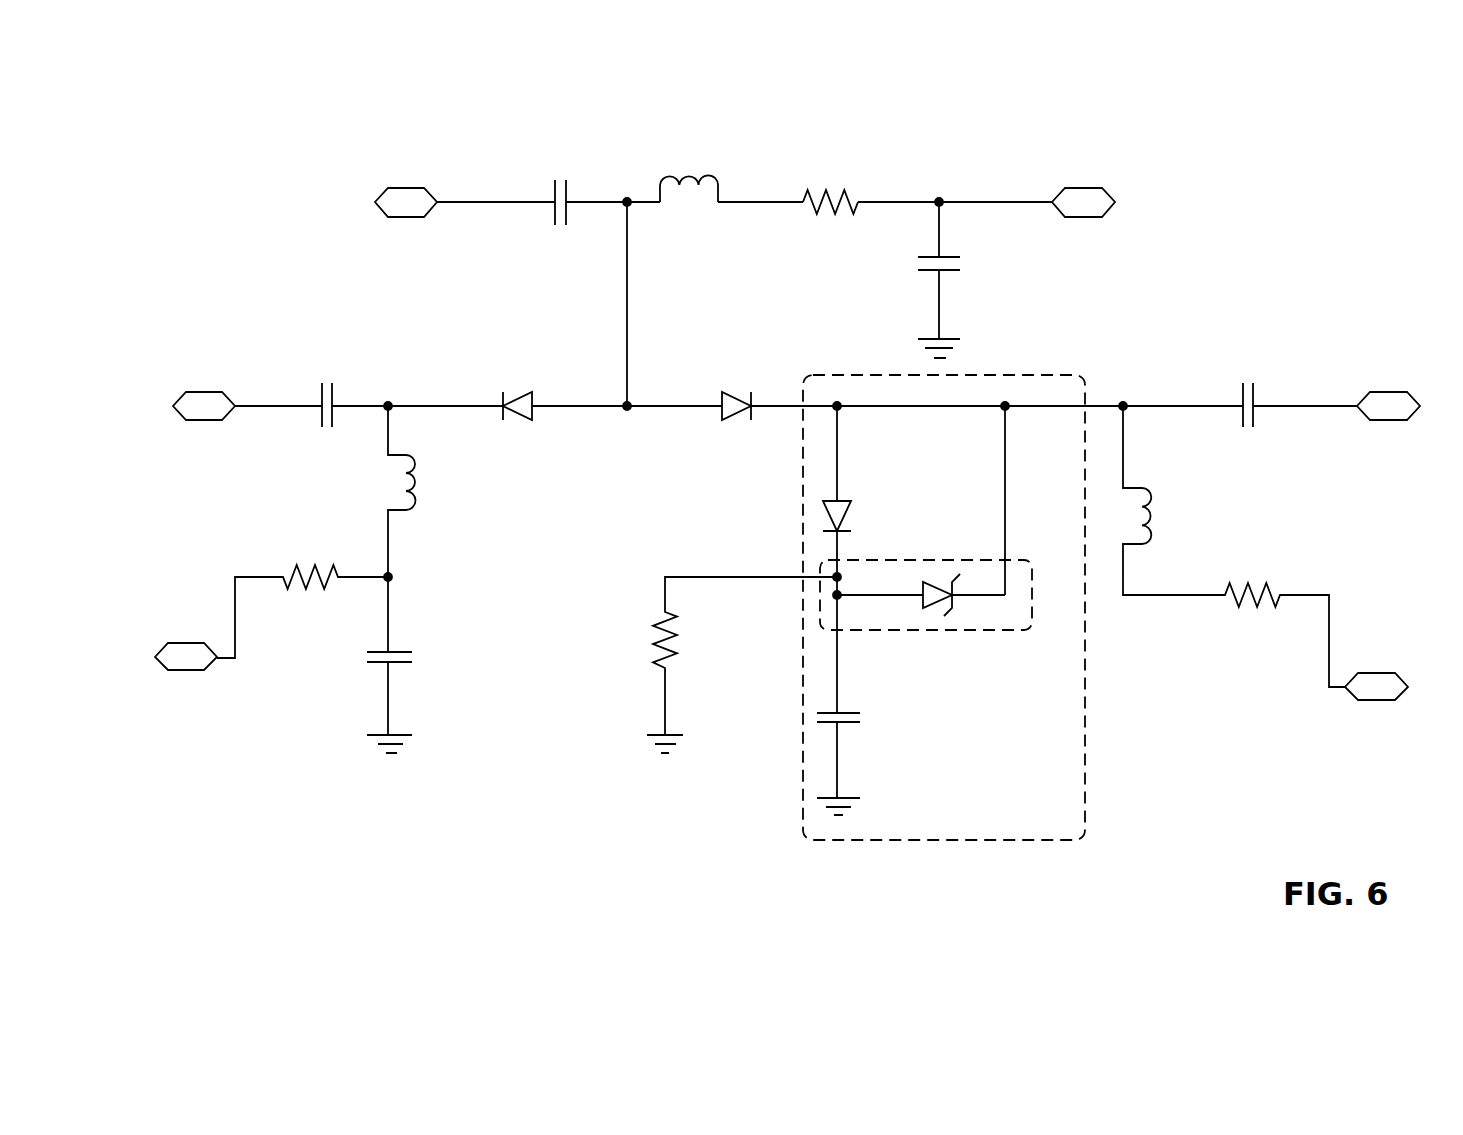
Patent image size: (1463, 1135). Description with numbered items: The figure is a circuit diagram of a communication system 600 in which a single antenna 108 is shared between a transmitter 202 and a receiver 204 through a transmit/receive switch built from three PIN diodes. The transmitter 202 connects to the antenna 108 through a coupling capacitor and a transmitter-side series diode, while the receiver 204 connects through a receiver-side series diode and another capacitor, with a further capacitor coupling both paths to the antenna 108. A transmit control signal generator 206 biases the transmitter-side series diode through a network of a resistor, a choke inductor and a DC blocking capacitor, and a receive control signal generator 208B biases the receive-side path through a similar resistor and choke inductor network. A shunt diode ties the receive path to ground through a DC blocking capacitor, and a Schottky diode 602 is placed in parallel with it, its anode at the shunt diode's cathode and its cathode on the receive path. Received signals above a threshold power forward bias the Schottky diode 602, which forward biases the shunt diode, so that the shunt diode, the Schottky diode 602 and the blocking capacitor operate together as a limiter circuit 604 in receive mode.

The communication system 600 is at (232, 122).
The antenna 108 is at (392, 217).
The transmitter 202 is at (195, 420).
The receiver 204 is at (1382, 420).
The transmit control signal generator 206 is at (178, 670).
The receive control signal generator 208B is at (1365, 700).
The limiter circuit 604 is at (880, 375).
The Schottky diode 602 is at (968, 630).